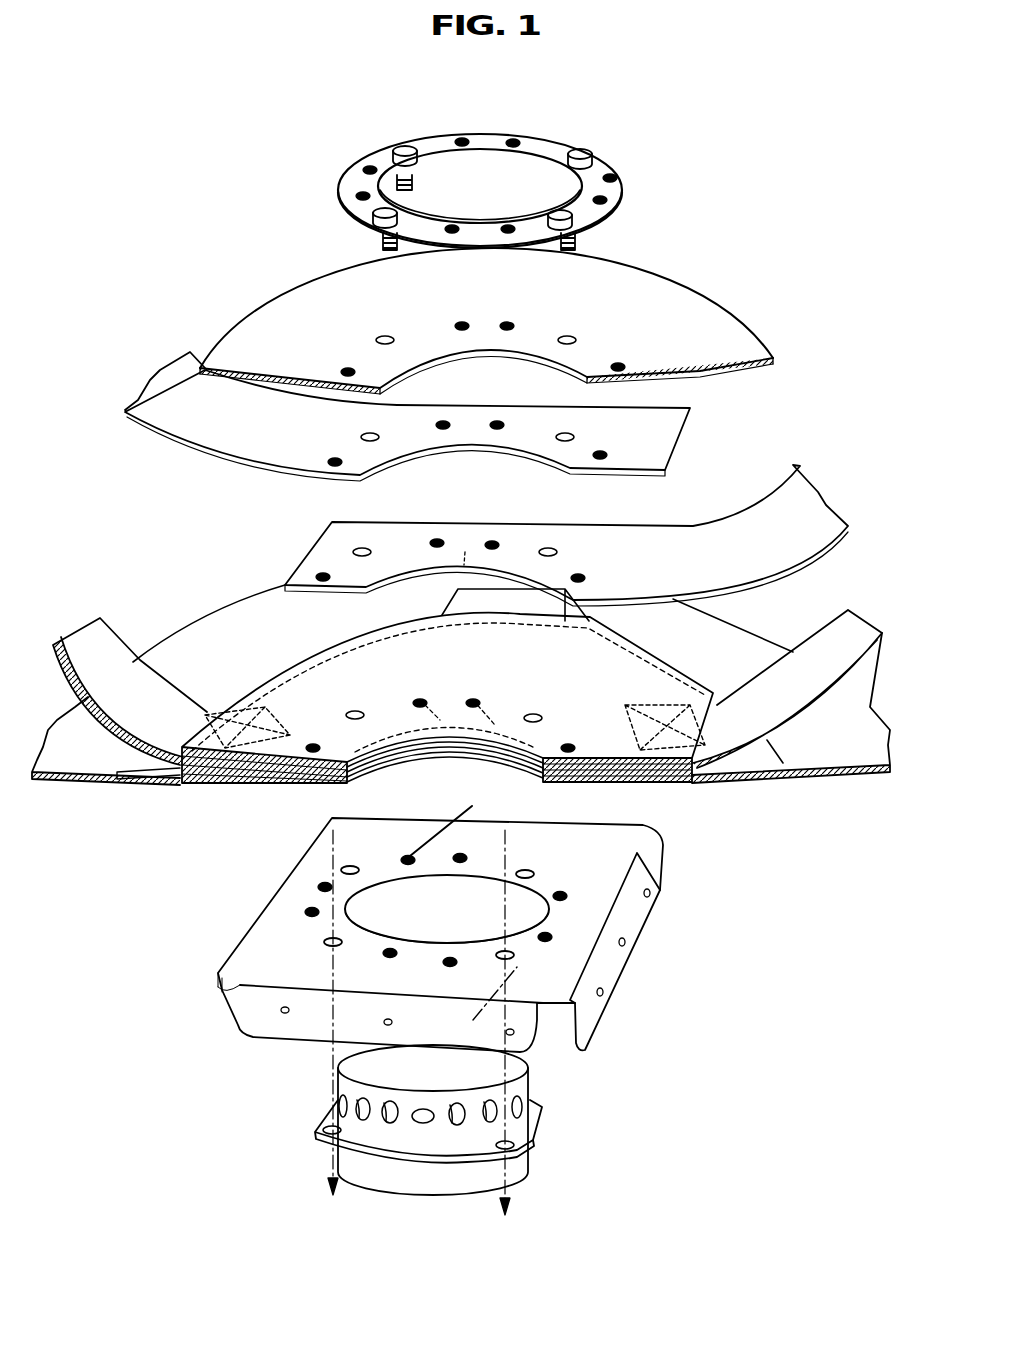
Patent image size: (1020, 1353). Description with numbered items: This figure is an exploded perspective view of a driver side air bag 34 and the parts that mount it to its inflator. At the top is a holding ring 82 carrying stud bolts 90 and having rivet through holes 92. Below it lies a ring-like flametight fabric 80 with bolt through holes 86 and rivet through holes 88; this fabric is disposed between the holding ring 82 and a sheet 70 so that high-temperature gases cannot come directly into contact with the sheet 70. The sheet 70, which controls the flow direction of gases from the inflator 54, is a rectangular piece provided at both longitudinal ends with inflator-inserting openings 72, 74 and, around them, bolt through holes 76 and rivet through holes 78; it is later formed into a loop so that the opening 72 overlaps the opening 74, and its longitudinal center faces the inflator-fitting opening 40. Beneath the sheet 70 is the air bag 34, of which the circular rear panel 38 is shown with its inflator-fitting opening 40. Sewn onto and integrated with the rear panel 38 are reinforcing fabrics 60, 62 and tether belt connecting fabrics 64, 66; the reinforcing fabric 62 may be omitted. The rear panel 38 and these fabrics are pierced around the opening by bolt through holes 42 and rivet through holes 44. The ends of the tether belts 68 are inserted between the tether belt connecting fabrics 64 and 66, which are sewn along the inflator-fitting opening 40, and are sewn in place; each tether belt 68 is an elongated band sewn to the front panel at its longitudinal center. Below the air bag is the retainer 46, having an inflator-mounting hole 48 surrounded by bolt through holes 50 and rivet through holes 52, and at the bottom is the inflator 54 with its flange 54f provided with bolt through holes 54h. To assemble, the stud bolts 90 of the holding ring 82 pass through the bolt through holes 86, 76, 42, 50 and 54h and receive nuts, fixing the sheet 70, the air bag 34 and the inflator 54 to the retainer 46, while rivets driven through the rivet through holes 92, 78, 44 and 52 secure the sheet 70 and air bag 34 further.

The air bag 34 is at (800, 790).
The rear panel 38 is at (870, 861).
The inflator-fitting opening 40 is at (378, 768).
The bolt through holes 42 is at (355, 710).
The rivet through holes 44 is at (313, 744).
The retainer 46 is at (643, 855).
The inflator-mounting hole 48 is at (412, 938).
The bolt through holes 50 is at (343, 866).
The rivet through holes 52 is at (466, 854).
The inflator 54 is at (526, 1170).
The flange 54f is at (540, 1126).
The bolt through holes 54h is at (327, 1128).
The reinforcing fabric 60 is at (130, 786).
The reinforcing fabric 62 is at (292, 660).
The tether belt connecting fabric 64 is at (185, 786).
The tether belt connecting fabric 66 is at (178, 752).
The tether belts 68 is at (82, 640).
The sheet 70 is at (683, 418).
The inflator-inserting opening 72 is at (465, 543).
The inflator-inserting opening 74 is at (480, 448).
The bolt through holes 76 is at (572, 436).
The rivet through holes 78 is at (497, 421).
The flametight fabric 80 is at (740, 332).
The holding ring 82 is at (603, 167).
The bolt through holes 86 is at (385, 336).
The rivet through holes 88 is at (507, 323).
The stud bolts 90 is at (400, 148).
The rivet through holes 92 is at (512, 141).